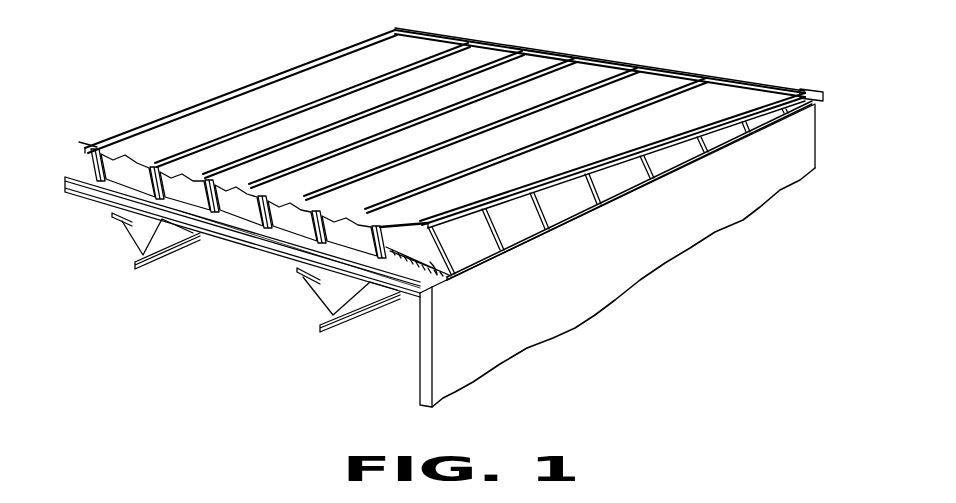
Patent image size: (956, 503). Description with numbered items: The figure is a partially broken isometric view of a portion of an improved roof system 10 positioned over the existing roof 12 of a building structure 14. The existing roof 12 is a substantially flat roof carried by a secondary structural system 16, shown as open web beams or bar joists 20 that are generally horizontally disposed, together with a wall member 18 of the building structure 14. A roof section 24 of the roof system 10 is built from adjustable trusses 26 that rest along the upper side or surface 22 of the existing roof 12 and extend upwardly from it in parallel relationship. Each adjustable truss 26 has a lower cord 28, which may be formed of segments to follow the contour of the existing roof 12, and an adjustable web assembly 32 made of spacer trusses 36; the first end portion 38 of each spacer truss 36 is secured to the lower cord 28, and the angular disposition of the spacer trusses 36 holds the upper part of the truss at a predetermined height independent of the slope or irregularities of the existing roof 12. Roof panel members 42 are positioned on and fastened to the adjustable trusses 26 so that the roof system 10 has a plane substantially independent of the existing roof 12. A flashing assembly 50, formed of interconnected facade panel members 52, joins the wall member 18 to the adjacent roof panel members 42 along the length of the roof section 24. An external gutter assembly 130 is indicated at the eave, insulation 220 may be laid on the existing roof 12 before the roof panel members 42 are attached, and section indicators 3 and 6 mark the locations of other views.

The improved roof system 10 is at (302, 56).
The existing roof 12 is at (417, 284).
The building structure 14 is at (820, 124).
The secondary structural system 16 is at (150, 270).
The wall member 18 is at (548, 303).
The open web beams or trusses 20 is at (292, 278).
The upper side or surface 22 is at (296, 258).
The roof section 24 is at (541, 53).
The adjustable trusses 26 is at (85, 157).
The lower cord 28 is at (110, 190).
The adjustable web assembly 32 is at (161, 185).
The spacer trusses 36 is at (147, 180).
The first end portion 38 is at (386, 241).
The roof panel members 42 is at (441, 141).
The flashing assembly 50 is at (601, 206).
The facade panel members 52 is at (476, 249).
The external gutter assembly 130 is at (811, 88).
The insulation 220 is at (430, 264).
The section line 3- 3 is at (550, 173).
The section line 6- 6 is at (737, 68).